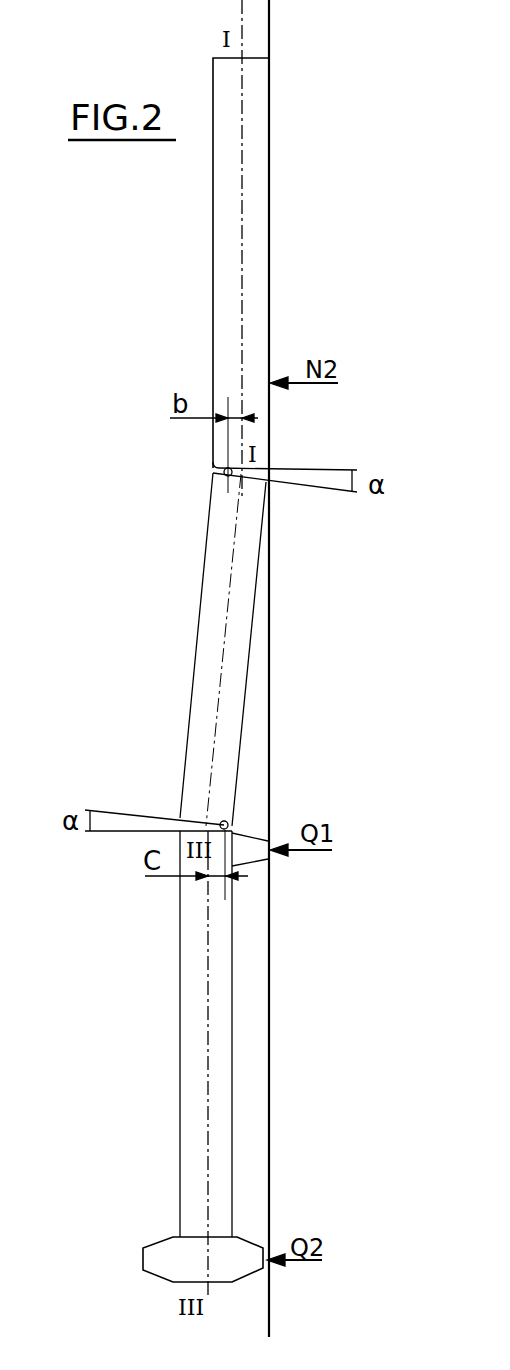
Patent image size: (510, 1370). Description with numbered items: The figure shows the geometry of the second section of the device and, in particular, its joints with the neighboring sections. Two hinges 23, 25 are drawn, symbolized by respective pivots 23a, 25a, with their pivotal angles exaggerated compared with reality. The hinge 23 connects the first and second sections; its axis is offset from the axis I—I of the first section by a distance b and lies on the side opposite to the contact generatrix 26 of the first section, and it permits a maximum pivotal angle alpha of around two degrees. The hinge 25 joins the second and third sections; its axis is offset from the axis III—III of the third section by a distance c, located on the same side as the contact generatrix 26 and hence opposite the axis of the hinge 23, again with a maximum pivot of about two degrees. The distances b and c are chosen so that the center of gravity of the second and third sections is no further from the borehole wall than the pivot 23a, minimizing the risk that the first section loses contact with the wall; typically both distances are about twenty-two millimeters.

The contact generatrix 26 is at (270, 278).
The hinge 23 is at (267, 438).
The pivot 23a is at (228, 472).
The pivot 25a is at (232, 826).
The hinge 25 is at (232, 846).